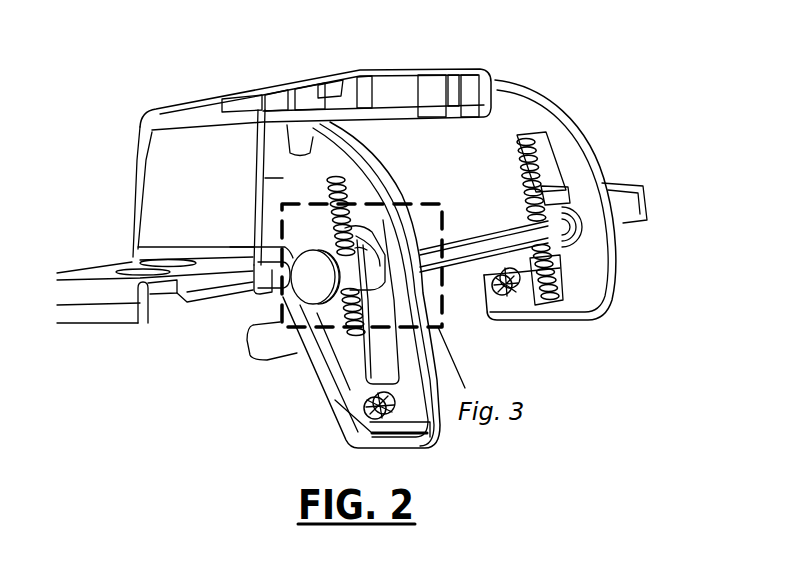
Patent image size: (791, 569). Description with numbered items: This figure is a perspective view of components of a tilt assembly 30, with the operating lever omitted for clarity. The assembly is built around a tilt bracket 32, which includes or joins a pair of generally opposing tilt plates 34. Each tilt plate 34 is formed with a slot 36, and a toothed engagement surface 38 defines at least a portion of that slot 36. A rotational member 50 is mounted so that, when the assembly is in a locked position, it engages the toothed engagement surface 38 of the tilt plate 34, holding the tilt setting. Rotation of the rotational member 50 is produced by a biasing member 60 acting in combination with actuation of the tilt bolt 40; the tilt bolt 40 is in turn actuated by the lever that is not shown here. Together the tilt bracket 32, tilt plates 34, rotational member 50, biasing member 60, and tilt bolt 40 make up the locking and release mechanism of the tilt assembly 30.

The tilt assembly 30 is at (126, 50).
The tilt bracket 32 is at (412, 60).
The tilt plate 34 is at (283, 178).
The slot 36 is at (543, 153).
The toothed engagement surface 38 is at (552, 282).
The tilt bolt 40 is at (515, 290).
The rotational member 50 is at (545, 195).
The biasing member 60 is at (572, 232).